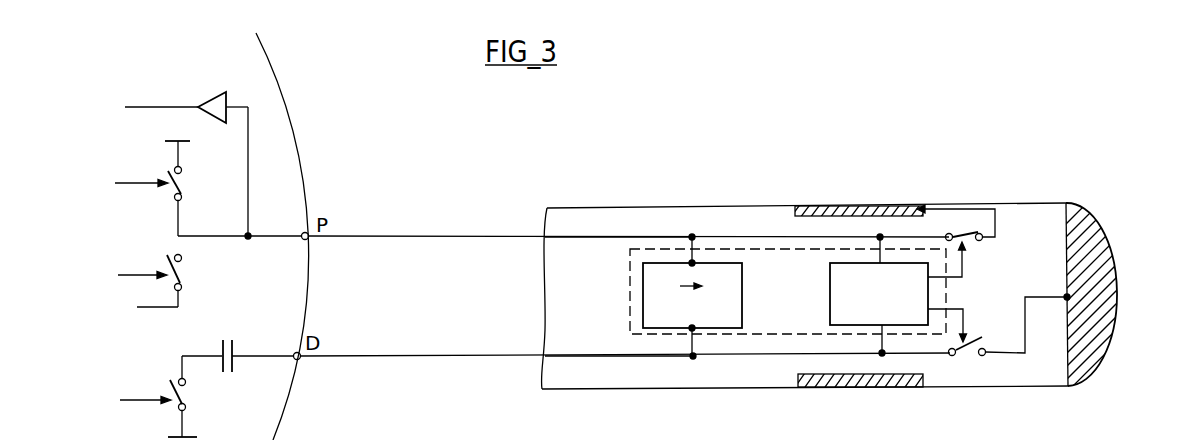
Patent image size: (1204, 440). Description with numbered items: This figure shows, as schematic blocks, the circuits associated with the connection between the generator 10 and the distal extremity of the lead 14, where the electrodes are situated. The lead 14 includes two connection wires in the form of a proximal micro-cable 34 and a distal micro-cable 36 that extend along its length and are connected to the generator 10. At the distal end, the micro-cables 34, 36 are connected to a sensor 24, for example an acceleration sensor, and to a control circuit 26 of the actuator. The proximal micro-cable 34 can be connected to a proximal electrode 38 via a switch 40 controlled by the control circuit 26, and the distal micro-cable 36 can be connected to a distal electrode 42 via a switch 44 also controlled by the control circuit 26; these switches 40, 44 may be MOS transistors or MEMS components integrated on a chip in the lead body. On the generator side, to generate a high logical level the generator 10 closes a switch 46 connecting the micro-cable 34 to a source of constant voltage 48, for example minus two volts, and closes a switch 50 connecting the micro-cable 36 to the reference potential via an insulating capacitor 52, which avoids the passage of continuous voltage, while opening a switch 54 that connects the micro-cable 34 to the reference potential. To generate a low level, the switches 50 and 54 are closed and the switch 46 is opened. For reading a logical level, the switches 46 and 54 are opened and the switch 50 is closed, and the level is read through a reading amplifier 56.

The generator 10 is at (280, 80).
The lead 14 is at (748, 207).
The sensor 24 is at (643, 290).
The control circuit 26 is at (830, 298).
The proximal micro-cable 34 is at (588, 237).
The distal micro-cable 36 is at (591, 357).
The proximal electrode 38 is at (867, 206).
The switch 40 is at (967, 230).
The distal electrode 42 is at (1117, 297).
The switch 44 is at (960, 357).
The switch 46 is at (181, 273).
The source of constant voltage 48 is at (152, 308).
The switch 50 is at (185, 393).
The capacitor 52 is at (228, 342).
The switch 54 is at (183, 183).
The reading amplifier 56 is at (213, 95).